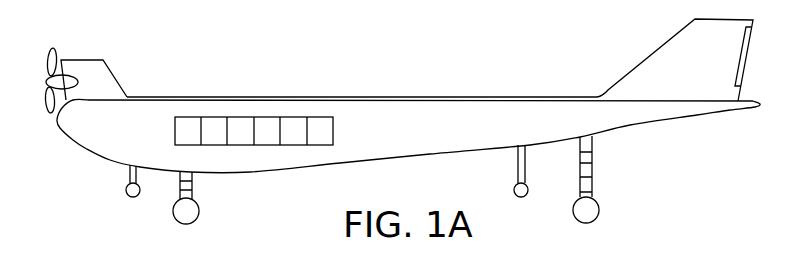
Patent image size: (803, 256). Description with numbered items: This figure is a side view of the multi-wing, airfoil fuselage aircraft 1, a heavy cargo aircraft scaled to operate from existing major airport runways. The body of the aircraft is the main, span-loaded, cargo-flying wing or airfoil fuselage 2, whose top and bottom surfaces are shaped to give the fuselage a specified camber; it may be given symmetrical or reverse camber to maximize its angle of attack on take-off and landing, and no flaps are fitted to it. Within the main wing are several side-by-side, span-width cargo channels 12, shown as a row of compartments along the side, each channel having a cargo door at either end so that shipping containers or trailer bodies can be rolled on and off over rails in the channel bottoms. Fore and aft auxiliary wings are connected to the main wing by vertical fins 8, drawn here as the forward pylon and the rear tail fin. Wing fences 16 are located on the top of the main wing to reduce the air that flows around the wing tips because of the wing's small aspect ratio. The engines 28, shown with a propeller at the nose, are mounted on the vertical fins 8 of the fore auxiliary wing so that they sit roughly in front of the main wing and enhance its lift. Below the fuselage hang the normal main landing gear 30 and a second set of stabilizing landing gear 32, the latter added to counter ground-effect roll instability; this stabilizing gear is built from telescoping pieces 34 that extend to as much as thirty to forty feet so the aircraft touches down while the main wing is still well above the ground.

The multi-wing, airfoil fuselage aircraft 1 is at (425, 65).
The airfoil fuselage 2 is at (533, 139).
The vertical fins 8 is at (100, 80).
The cargo channels 12 is at (294, 117).
The wing fences 16 is at (458, 100).
The engines 28 is at (56, 50).
The main landing gear 30 is at (130, 176).
The stabilizing landing gear 32 is at (594, 171).
The telescoping pieces 34 is at (196, 183).